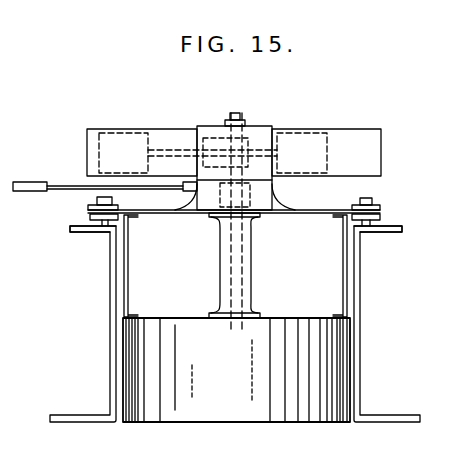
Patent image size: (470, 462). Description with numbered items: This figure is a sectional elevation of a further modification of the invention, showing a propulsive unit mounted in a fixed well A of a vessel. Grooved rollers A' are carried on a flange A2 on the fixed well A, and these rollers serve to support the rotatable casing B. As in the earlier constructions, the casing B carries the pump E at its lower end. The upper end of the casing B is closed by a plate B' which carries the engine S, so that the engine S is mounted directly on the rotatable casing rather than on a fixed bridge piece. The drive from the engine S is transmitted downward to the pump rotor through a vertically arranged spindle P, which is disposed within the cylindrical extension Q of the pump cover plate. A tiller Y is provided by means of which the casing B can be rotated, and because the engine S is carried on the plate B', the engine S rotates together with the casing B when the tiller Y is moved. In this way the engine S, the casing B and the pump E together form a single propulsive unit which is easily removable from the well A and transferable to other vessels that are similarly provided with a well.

The well A is at (235, 316).
The grooved rollers A' is at (229, 209).
The flange A2 is at (90, 233).
The casing B is at (235, 266).
The plate B' is at (232, 179).
The pump E is at (236, 370).
The spindle P is at (241, 259).
The pump cover Q is at (220, 283).
The engine S is at (148, 128).
The tiller Y is at (26, 183).